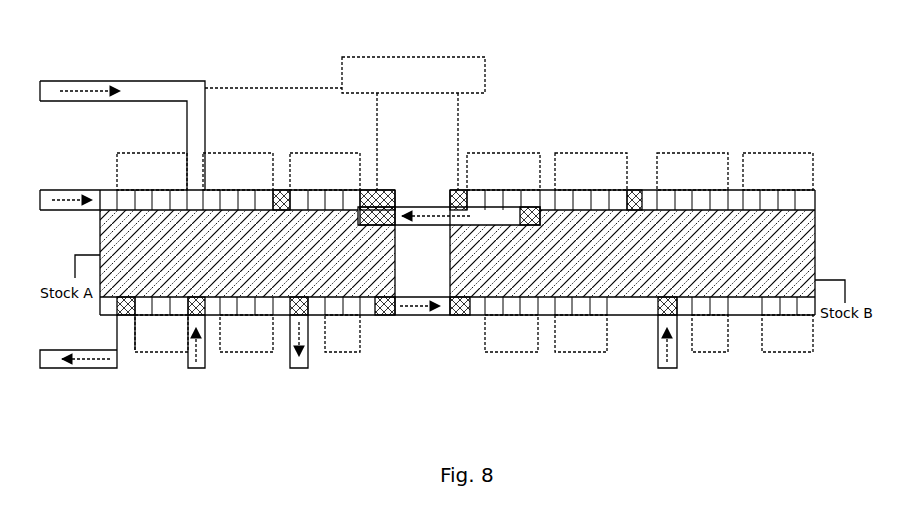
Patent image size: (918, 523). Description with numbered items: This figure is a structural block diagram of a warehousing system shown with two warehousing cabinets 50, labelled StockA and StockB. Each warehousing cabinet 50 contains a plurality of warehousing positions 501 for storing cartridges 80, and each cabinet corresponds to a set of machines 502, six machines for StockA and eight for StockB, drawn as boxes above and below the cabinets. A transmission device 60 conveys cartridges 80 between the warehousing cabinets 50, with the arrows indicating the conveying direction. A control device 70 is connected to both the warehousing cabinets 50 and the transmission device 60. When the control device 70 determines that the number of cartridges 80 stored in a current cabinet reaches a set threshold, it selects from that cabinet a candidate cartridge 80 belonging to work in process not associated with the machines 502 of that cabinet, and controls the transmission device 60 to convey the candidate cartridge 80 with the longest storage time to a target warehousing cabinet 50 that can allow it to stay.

The warehousing cabinet 50 is at (815, 245).
The warehousing position 501 is at (815, 192).
The machine 502 is at (700, 153).
The transmission device 60 is at (183, 78).
The control device 70 is at (405, 57).
The cartridge 80 is at (660, 330).